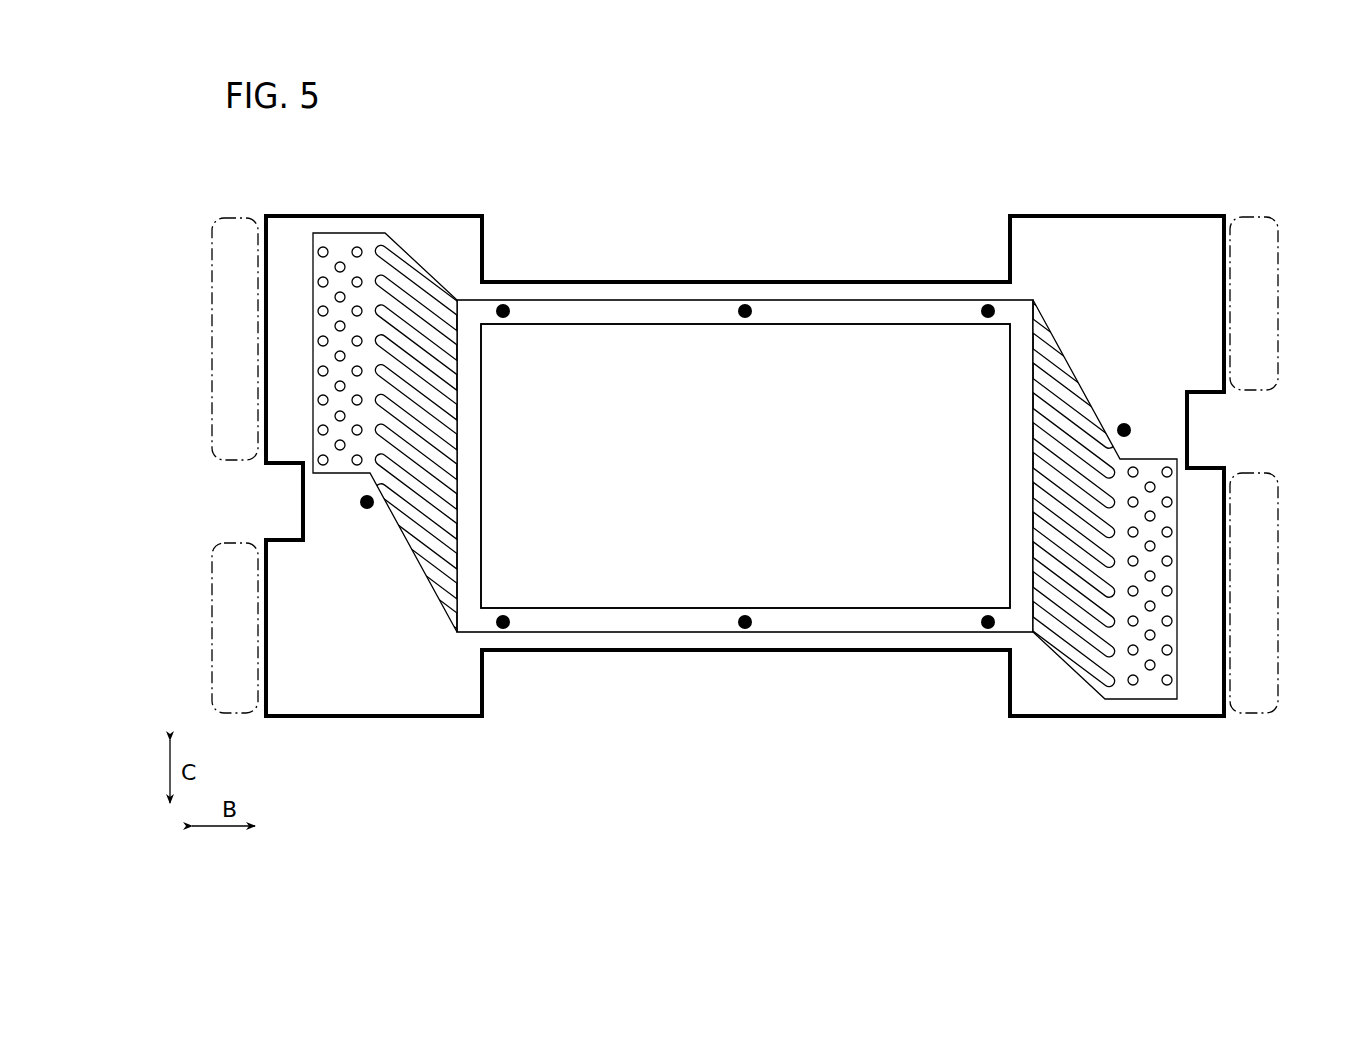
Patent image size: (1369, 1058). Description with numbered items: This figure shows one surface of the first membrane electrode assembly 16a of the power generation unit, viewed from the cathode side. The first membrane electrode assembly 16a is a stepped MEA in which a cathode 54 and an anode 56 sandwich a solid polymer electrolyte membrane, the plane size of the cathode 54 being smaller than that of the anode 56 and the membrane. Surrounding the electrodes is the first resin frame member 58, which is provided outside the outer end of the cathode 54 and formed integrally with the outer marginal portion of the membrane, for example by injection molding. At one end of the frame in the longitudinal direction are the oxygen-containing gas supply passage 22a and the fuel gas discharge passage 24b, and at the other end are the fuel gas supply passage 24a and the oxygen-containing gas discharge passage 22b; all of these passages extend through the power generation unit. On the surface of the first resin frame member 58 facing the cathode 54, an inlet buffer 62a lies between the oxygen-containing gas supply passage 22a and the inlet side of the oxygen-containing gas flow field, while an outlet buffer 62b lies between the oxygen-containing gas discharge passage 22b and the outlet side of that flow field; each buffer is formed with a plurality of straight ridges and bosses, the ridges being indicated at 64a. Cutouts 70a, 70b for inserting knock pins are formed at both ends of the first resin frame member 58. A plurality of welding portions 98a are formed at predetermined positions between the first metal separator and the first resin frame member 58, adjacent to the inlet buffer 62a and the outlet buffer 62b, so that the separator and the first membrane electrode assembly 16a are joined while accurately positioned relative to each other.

The first membrane electrode assembly 16a is at (339, 153).
The first resin frame member 58 is at (1094, 212).
The inlet buffer 62a is at (408, 238).
The outlet buffer 62b is at (1065, 690).
The connection channels 64a is at (432, 293).
The cathode 54 is at (610, 342).
The anode 56 is at (682, 340).
The welding portions 98a is at (982, 316).
The cutout 70a is at (303, 501).
The cutout 70b is at (1187, 432).
The oxygen-containing gas supply passage 22a is at (230, 272).
The oxygen-containing gas discharge passage 22b is at (1262, 556).
The fuel gas supply passage 24a is at (1262, 288).
The fuel gas discharge passage 24b is at (230, 616).